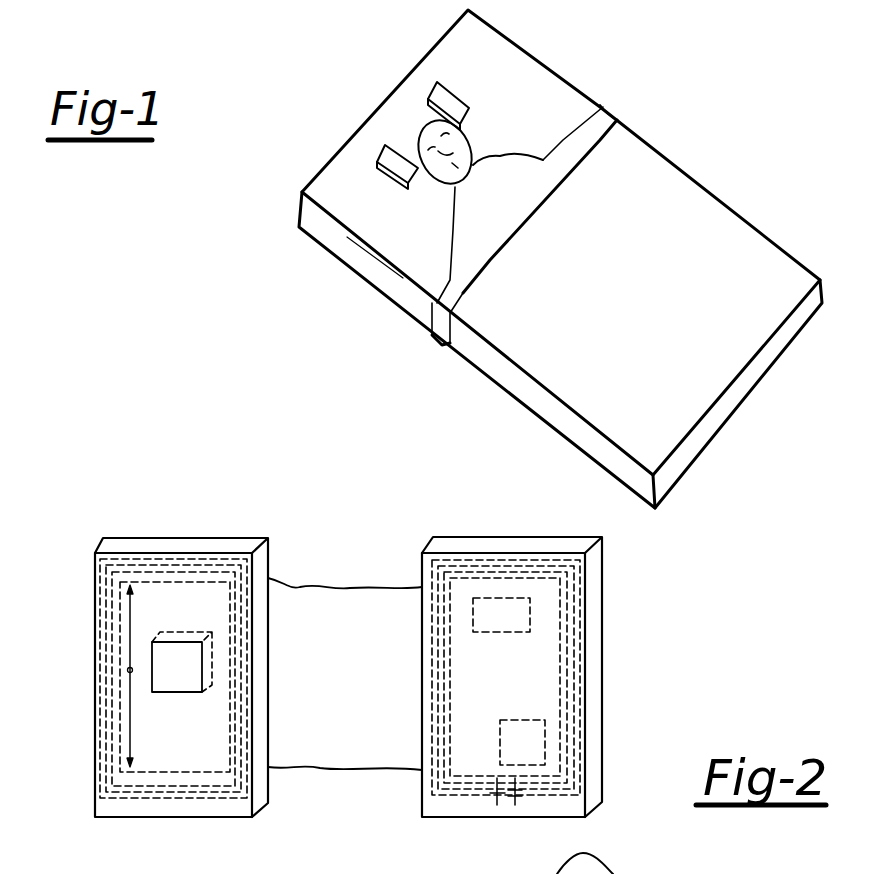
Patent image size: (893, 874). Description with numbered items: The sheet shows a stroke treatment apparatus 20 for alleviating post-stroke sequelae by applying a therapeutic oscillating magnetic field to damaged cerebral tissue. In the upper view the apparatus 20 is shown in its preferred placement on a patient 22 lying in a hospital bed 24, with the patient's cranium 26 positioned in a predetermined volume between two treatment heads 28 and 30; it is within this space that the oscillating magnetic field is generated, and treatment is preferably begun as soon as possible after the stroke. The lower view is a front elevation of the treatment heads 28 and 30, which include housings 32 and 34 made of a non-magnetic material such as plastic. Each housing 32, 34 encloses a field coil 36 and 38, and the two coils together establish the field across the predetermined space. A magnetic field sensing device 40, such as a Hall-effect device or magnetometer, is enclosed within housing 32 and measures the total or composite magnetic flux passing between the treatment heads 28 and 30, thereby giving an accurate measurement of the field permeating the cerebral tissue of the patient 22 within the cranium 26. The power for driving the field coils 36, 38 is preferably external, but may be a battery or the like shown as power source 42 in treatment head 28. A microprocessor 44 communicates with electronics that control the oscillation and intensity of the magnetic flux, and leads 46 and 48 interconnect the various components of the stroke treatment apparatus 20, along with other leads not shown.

In FIG. 1, the stroke treatment apparatus 20 is at (343, 180).
In FIG. 1, the patient 22 is at (513, 150).
In FIG. 1, the hospital bed 24 is at (322, 236).
In FIG. 1, the cranium 26 is at (423, 122).
In FIG. 1, the treatment head 28 is at (388, 178).
In FIG. 2, the treatment head 28 is at (569, 702).
In FIG. 1, the treatment head 30 is at (462, 100).
In FIG. 2, the treatment head 30 is at (145, 647).
In FIG. 2, the housing 32 is at (93, 643).
In FIG. 2, the housing 34 is at (603, 648).
In FIG. 2, the field coil 36 is at (102, 725).
In FIG. 2, the field coil 38 is at (565, 788).
In FIG. 2, the magnetic field sensing device 40 is at (173, 697).
In FIG. 2, the power source 42 is at (488, 633).
In FIG. 2, the microprocessor 44 is at (545, 742).
In FIG. 2, the lead 46 is at (293, 587).
In FIG. 2, the lead 48 is at (340, 770).